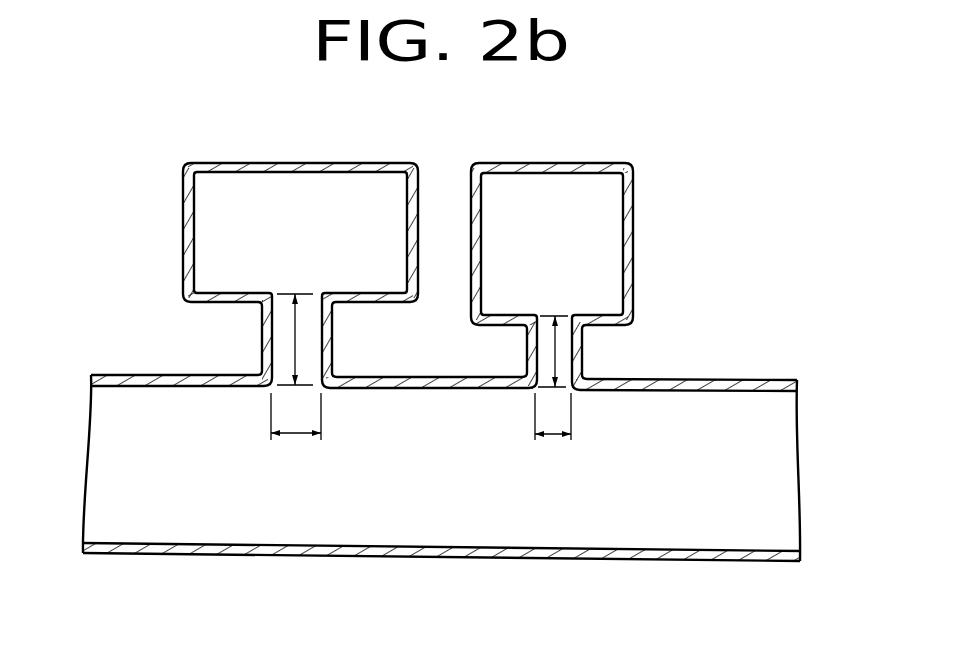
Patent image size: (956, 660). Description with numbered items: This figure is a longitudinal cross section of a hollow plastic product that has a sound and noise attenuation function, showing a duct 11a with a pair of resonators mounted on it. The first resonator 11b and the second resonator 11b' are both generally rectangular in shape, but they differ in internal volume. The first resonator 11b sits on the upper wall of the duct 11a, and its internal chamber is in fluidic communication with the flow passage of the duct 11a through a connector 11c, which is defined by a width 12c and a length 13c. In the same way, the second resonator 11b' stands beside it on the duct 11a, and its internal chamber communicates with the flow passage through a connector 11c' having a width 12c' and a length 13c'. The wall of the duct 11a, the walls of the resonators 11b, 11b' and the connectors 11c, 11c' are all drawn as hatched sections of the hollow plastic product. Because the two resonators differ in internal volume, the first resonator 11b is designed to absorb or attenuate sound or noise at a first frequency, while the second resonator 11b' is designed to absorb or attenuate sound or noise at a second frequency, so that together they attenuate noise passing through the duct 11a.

The duct 11a is at (460, 522).
The first resonator 11b is at (256, 217).
The second resonator 11b' is at (603, 230).
The connector 11c is at (250, 339).
The connector 11c' is at (599, 351).
The width 12c is at (296, 431).
The width 12c' is at (561, 432).
The length 13c is at (332, 339).
The length 13c' is at (515, 351).